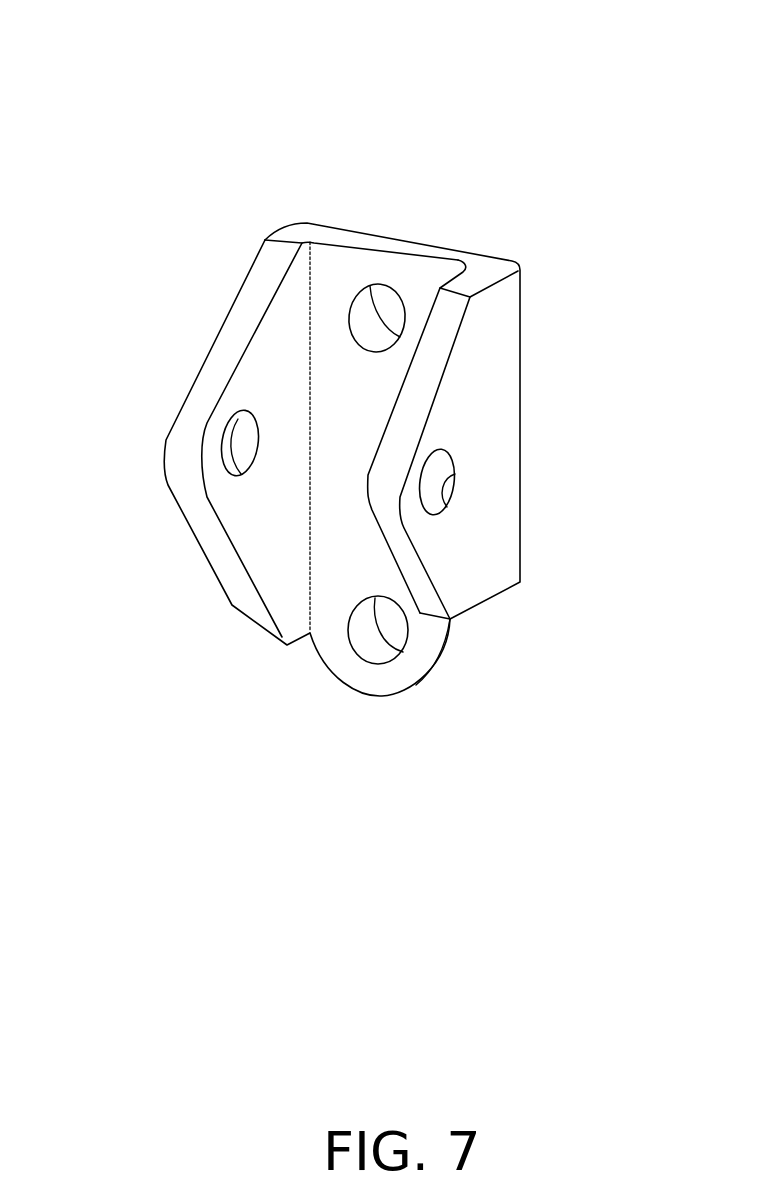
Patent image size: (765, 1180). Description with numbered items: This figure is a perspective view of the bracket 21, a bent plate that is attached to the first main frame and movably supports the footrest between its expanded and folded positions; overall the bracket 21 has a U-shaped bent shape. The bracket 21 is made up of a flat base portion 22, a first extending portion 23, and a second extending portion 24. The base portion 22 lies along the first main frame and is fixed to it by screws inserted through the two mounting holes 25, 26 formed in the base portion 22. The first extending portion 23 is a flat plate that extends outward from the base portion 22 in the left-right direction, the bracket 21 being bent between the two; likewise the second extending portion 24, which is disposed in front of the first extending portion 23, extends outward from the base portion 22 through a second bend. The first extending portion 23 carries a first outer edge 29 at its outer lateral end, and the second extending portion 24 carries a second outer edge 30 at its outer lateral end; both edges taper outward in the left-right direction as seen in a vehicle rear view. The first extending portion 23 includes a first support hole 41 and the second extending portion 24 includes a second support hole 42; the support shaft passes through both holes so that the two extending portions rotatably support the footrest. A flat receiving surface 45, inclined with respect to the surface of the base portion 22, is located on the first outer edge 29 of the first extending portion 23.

The bracket 21 is at (387, 134).
The base portion 22 is at (338, 513).
The first extending portion 23 is at (482, 400).
The second extending portion 24 is at (258, 365).
The mounting hole 25 is at (366, 326).
The mounting hole 26 is at (373, 643).
The first outer edge 29 is at (386, 460).
The second outer edge 30 is at (187, 490).
The first support hole 41 is at (455, 475).
The second support hole 42 is at (230, 427).
The receiving surface 45 is at (430, 347).